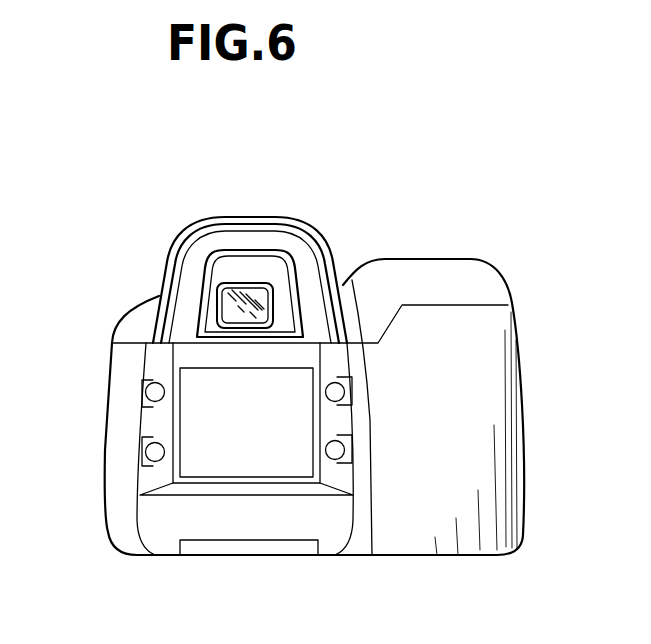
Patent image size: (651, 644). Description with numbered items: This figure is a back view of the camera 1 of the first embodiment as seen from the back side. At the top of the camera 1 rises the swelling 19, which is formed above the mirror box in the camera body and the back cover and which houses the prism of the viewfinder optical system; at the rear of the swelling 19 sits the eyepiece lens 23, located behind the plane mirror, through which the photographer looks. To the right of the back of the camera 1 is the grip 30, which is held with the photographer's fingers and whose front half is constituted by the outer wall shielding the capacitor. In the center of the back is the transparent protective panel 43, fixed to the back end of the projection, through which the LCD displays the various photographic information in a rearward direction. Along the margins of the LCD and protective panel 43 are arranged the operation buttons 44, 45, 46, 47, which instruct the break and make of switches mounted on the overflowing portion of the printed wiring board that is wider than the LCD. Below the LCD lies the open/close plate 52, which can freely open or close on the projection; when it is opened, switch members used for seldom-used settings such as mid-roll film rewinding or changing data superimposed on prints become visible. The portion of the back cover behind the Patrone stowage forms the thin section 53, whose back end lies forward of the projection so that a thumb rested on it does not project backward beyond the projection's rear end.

The camera 1 is at (160, 257).
The swelling 19 is at (275, 242).
The eyepiece lens 23 is at (267, 303).
The grip 30 is at (523, 333).
The transparent protective panel 43 is at (272, 467).
The operation button 44 is at (146, 391).
The operation button 45 is at (146, 449).
The operation button 46 is at (344, 391).
The operation button 47 is at (344, 450).
The open/close plate 52 is at (172, 527).
The thin section 53 is at (390, 362).